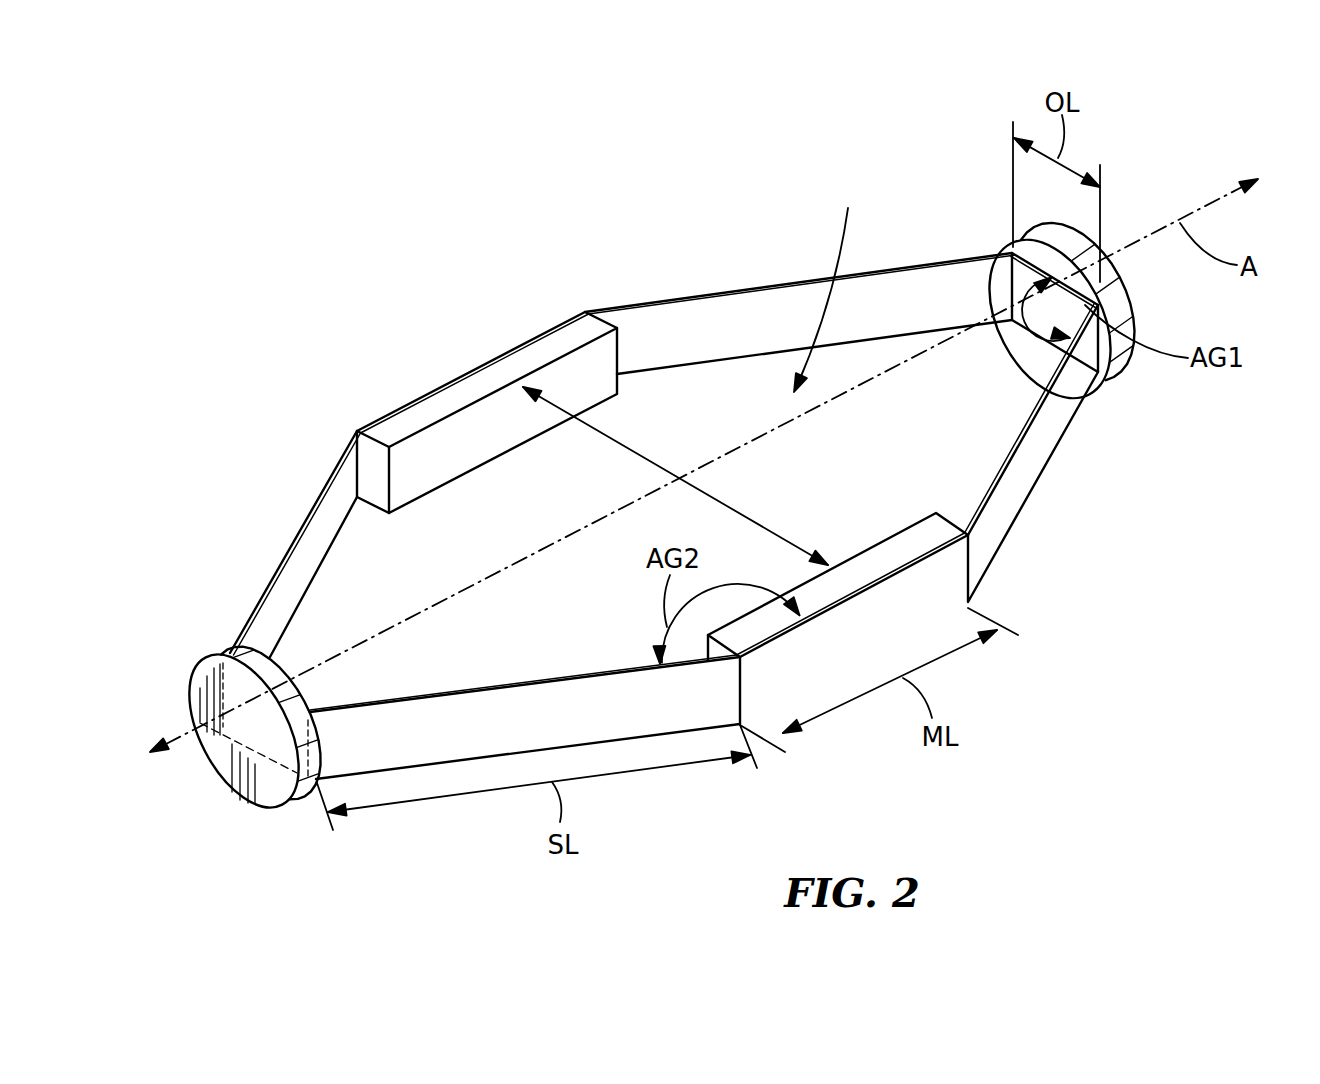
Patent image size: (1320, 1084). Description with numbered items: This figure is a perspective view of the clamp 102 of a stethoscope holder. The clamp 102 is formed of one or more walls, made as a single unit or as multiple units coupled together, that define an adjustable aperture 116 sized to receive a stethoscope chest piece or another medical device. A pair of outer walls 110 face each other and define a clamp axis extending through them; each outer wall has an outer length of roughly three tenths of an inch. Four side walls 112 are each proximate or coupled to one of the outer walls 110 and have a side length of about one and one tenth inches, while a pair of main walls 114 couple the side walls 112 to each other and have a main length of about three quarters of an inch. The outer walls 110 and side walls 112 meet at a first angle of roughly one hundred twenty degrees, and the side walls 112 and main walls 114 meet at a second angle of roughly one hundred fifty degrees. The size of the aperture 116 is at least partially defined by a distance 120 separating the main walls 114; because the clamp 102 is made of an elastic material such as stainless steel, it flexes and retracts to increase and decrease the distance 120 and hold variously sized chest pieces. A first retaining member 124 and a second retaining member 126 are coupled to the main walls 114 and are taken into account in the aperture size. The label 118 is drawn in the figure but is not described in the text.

The clamp 102 is at (650, 337).
The outer walls 110 is at (1018, 280).
The side walls 112 is at (305, 515).
The main walls 114 is at (752, 444).
The adjustable aperture 116 is at (834, 282).
The inner wall surface 118 is at (757, 320).
The distance 120 is at (633, 452).
The first retaining member 124 is at (475, 452).
The second retaining member 126 is at (903, 530).